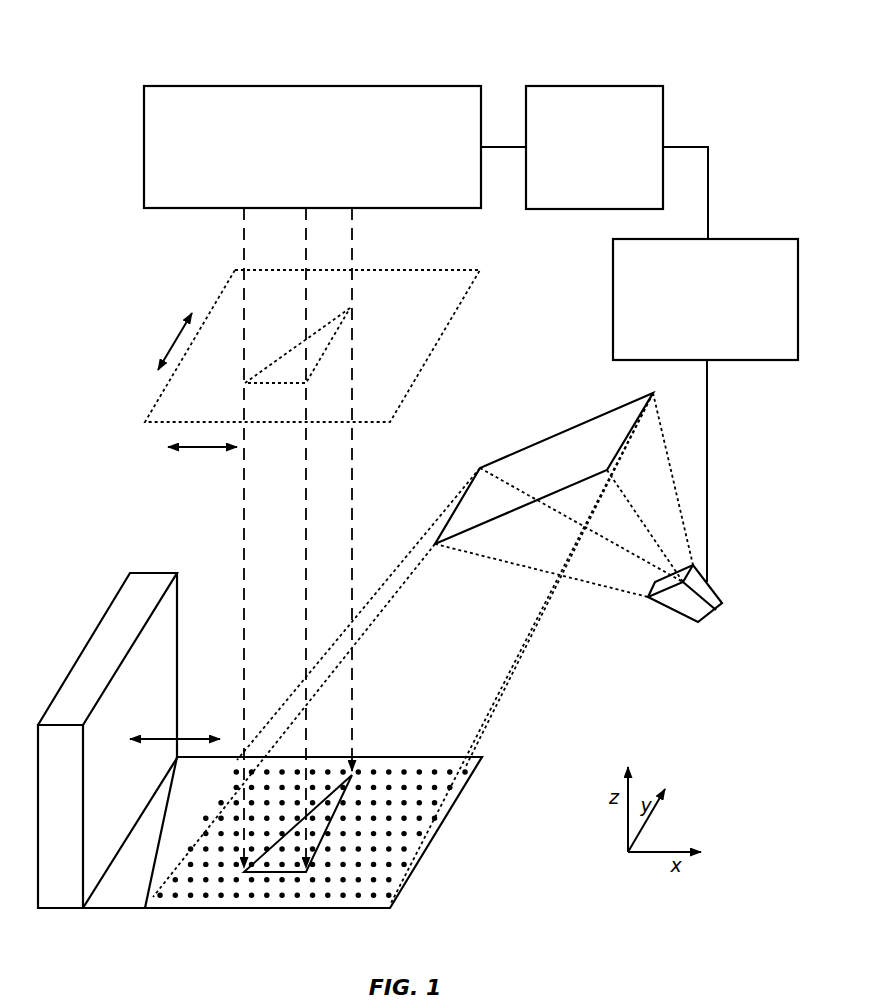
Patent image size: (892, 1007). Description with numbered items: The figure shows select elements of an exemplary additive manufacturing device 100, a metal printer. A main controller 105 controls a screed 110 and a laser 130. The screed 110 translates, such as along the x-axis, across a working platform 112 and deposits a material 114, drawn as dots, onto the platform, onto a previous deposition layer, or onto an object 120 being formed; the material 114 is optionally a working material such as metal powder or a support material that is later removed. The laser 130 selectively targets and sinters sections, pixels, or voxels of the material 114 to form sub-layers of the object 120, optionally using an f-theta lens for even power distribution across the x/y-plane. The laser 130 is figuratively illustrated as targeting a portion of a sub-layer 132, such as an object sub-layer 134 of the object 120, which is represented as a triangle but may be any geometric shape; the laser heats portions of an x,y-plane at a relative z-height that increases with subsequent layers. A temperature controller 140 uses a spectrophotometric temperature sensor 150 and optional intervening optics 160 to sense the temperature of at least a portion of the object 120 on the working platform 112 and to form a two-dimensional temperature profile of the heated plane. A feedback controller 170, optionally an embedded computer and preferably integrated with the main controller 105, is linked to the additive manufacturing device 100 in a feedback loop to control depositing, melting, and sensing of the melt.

The additive manufacturing device 100 is at (585, 52).
The main controller 105 is at (634, 86).
The screed 110 is at (153, 573).
The working platform 112 is at (393, 757).
The material 114 is at (416, 827).
The object 120 is at (272, 888).
The laser 130 is at (450, 86).
The sub-layer 132 is at (445, 270).
The object sub-layer 134 is at (360, 302).
The temperature controller 140 is at (694, 672).
The spectrophotometric temperature sensor 150 is at (713, 587).
The intervening optics 160 is at (553, 436).
The feedback controller 170 is at (753, 239).